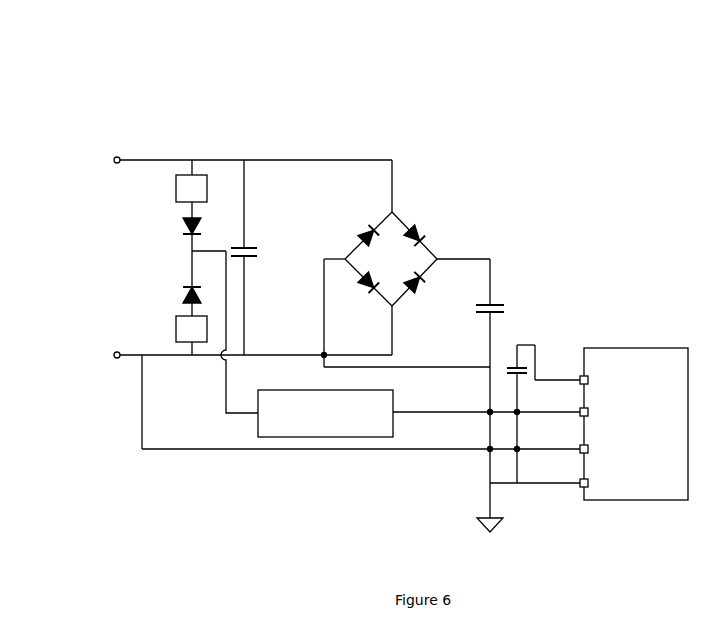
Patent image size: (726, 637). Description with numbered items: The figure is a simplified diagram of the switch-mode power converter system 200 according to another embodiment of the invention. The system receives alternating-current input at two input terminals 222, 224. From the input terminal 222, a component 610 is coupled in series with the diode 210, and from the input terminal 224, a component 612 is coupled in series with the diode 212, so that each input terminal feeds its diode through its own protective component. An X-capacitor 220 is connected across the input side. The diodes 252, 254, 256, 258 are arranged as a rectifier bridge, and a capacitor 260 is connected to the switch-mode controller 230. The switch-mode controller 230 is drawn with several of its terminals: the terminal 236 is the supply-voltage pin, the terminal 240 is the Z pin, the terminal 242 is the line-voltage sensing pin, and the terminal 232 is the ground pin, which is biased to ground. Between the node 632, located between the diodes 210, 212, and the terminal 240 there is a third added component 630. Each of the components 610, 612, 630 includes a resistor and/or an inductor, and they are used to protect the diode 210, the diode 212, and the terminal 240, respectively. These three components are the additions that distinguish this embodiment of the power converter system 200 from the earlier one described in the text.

The switch-mode power converter system 200 is at (60, 62).
The input terminal 222 is at (117, 157).
The input terminal 224 is at (117, 358).
The component 610 is at (176, 188).
The component 612 is at (176, 329).
The diode 210 is at (198, 227).
The diode 212 is at (188, 296).
The node 632 is at (192, 247).
The X-capacitor 220 is at (250, 257).
The diode 252 is at (362, 236).
The diode 254 is at (408, 228).
The diode 256 is at (373, 286).
The diode 258 is at (412, 290).
The capacitor 260 is at (513, 366).
The component 630 is at (393, 392).
The switch-mode controller 230 is at (655, 348).
The terminal 236 is at (581, 376).
The terminal 240 is at (580, 416).
The terminal 242 is at (580, 453).
The terminal 232 is at (580, 487).